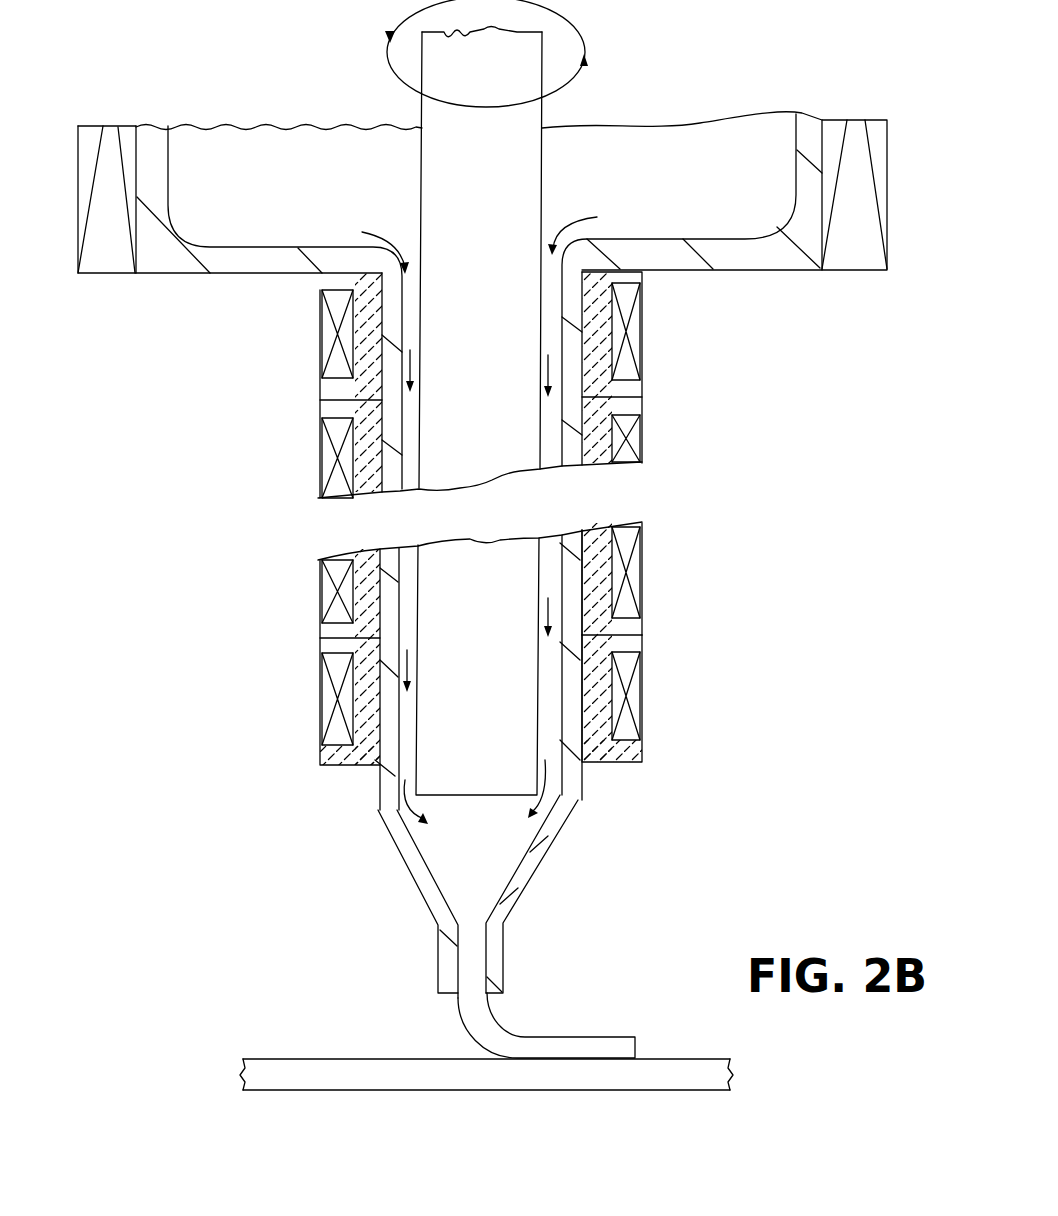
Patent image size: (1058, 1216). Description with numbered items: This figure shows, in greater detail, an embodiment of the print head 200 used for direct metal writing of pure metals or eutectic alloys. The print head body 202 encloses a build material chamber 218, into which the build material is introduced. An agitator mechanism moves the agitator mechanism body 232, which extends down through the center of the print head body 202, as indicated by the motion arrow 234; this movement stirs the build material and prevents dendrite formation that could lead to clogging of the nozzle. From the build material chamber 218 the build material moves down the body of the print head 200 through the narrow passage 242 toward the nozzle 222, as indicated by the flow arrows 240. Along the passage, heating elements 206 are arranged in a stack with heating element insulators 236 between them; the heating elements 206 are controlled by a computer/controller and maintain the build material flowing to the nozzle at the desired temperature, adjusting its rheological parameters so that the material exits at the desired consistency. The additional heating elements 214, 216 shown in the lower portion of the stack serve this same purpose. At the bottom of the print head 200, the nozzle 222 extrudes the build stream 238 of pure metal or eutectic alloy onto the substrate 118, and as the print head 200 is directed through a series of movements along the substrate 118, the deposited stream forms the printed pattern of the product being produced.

The print head 200 is at (680, 59).
The print head body 202 is at (250, 273).
The heating elements 206 is at (642, 343).
The lower coil 214 is at (643, 595).
The lower coil 216 is at (643, 705).
The build material chamber 218 is at (330, 209).
The nozzle 222 is at (410, 880).
The agitator mechanism body 232 is at (505, 185).
The motion arrow 234 is at (408, 80).
The heating element insulators 236 is at (642, 407).
The build stream 238 is at (536, 1036).
The flow arrows 240 is at (575, 222).
The narrow passage 242 is at (415, 462).
The substrate 118 is at (315, 1058).